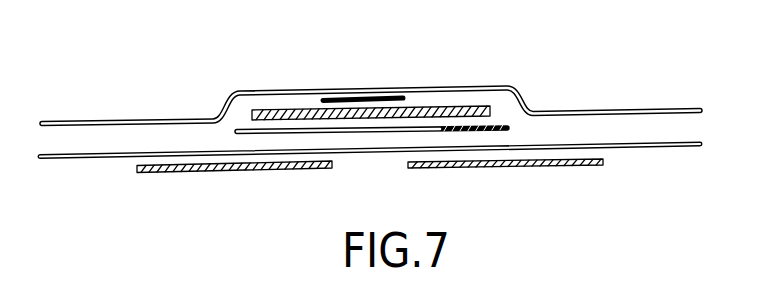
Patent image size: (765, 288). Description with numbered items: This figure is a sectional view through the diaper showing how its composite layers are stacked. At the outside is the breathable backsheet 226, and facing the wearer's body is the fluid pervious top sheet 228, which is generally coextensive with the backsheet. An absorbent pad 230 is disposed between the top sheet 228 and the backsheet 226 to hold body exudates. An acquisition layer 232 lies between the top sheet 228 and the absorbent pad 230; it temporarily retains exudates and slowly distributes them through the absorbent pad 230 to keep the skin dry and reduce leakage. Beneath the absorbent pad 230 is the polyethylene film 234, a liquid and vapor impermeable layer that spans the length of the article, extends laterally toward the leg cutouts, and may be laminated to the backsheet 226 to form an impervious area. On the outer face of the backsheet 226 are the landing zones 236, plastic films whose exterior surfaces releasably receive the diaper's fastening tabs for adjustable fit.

The breathable backsheet 226 is at (672, 148).
The top sheet 228 is at (413, 88).
The absorbent pad 230 is at (468, 110).
The acquisition layer 232 is at (327, 97).
The polyethylene film 234 is at (495, 128).
The landing zones 236 is at (218, 173).